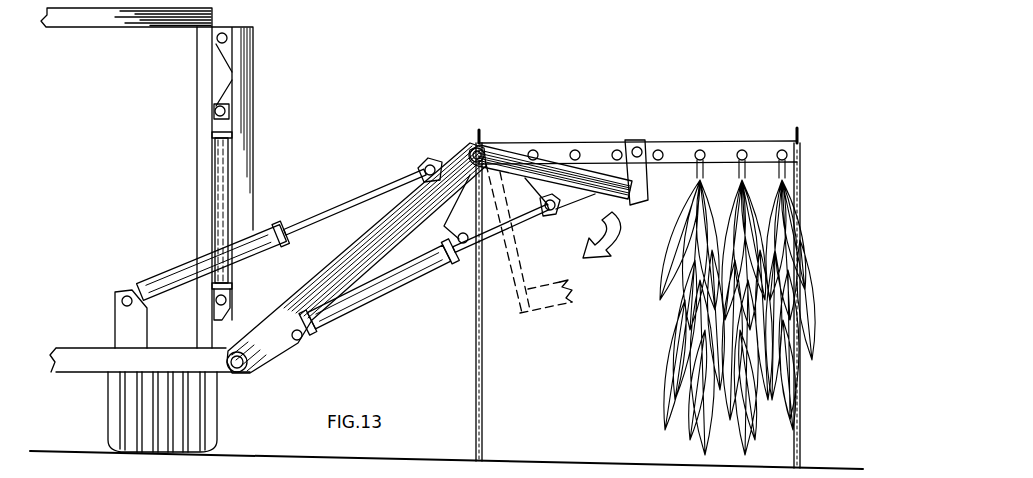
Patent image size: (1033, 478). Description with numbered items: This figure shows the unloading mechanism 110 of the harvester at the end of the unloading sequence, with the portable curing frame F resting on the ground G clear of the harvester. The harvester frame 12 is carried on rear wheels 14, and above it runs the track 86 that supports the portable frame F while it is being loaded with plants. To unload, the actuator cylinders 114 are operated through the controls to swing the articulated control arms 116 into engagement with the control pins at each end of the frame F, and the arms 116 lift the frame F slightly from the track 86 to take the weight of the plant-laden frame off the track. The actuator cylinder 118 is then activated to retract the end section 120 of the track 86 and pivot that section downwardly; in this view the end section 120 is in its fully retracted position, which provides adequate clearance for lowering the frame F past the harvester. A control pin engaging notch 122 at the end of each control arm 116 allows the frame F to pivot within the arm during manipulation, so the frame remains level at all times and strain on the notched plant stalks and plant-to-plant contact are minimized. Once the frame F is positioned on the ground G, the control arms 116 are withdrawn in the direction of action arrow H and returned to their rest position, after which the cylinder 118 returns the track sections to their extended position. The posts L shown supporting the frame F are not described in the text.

The frame 12 is at (86, 357).
The rear wheels 14 is at (115, 416).
The track 86 is at (92, 18).
The unloading mechanism 110 is at (358, 163).
The actuator cylinders 114 is at (165, 278).
The articulated control arms 116 is at (477, 142).
The actuator cylinder 118 is at (220, 205).
The end section 120 is at (253, 100).
The control pin engaging notch 122 is at (638, 148).
The frame F is at (596, 147).
The ground G is at (273, 452).
The action arrow H is at (602, 227).
The post L is at (476, 360).